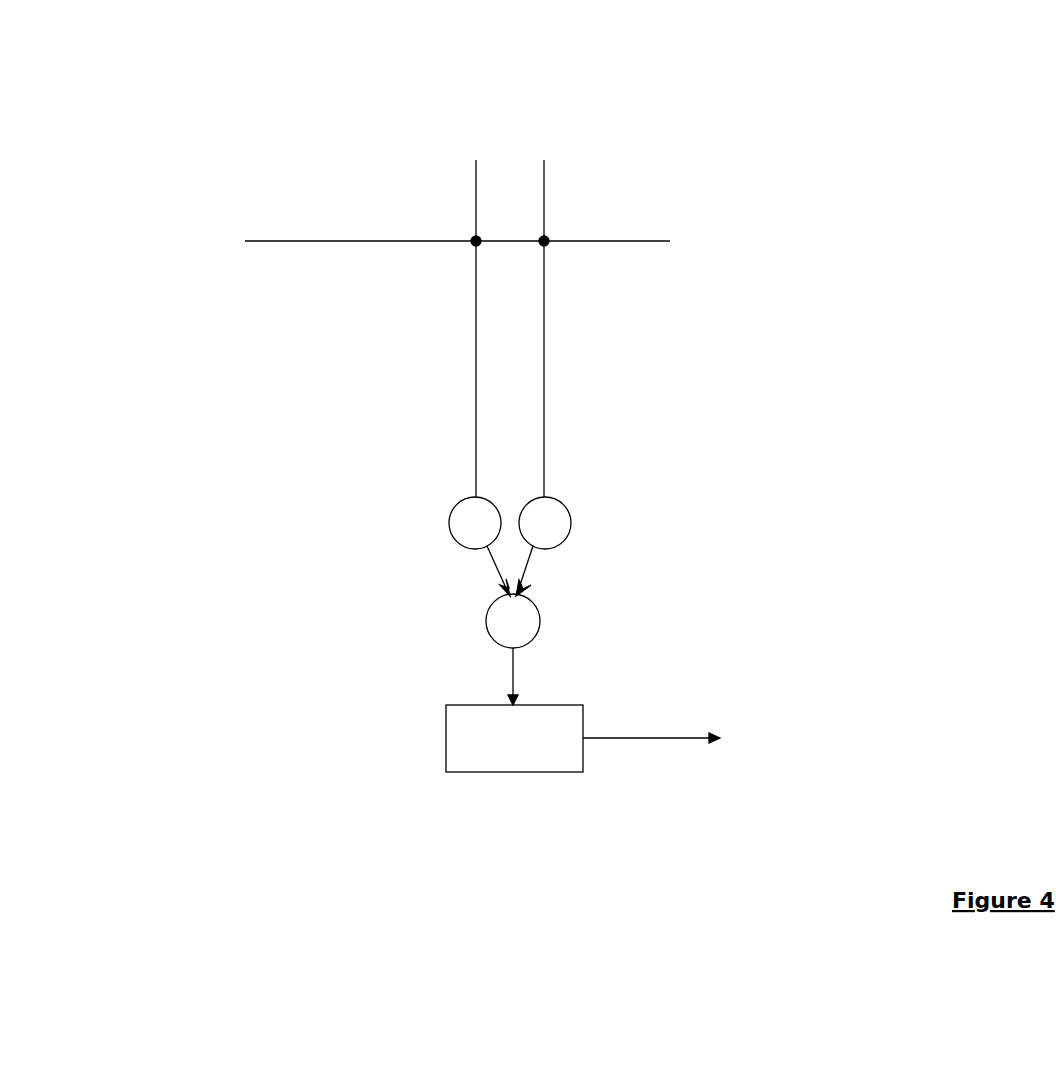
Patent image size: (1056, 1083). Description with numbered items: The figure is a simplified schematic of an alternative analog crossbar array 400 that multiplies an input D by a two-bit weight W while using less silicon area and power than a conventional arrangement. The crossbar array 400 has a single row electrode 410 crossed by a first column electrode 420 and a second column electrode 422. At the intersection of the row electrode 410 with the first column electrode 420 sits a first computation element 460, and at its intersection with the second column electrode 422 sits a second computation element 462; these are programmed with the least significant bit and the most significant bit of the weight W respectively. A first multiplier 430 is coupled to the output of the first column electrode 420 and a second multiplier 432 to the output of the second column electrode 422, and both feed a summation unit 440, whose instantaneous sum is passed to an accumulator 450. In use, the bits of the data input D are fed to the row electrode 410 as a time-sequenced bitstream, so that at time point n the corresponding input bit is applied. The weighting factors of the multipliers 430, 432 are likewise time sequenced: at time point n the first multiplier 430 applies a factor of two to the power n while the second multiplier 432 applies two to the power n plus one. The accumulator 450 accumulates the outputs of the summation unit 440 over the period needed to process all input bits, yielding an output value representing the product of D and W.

The crossbar array 400 is at (213, 109).
The row electrode 410 is at (313, 241).
The first column electrode 420 is at (476, 160).
The second column electrode 422 is at (544, 160).
The first multiplier 430 is at (484, 508).
The second multiplier 432 is at (556, 508).
The summation unit 440 is at (501, 634).
The accumulator 450 is at (545, 762).
The first computation element 460 is at (476, 241).
The second computation element 462 is at (544, 241).